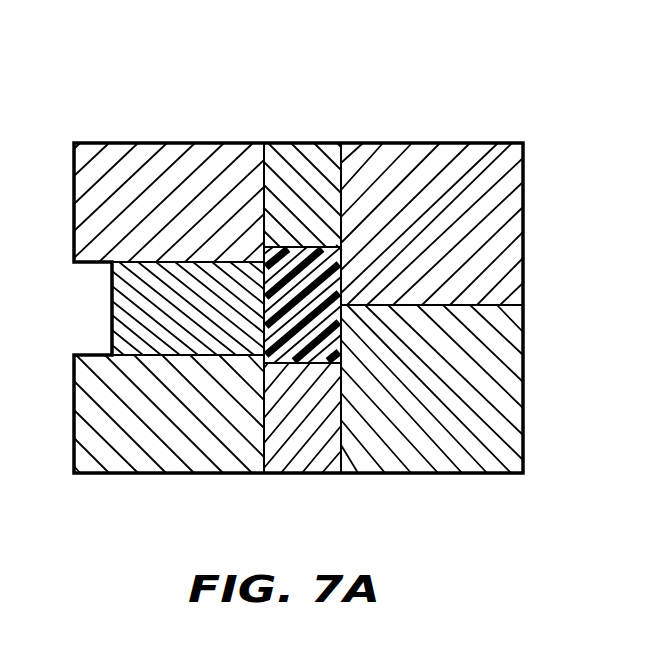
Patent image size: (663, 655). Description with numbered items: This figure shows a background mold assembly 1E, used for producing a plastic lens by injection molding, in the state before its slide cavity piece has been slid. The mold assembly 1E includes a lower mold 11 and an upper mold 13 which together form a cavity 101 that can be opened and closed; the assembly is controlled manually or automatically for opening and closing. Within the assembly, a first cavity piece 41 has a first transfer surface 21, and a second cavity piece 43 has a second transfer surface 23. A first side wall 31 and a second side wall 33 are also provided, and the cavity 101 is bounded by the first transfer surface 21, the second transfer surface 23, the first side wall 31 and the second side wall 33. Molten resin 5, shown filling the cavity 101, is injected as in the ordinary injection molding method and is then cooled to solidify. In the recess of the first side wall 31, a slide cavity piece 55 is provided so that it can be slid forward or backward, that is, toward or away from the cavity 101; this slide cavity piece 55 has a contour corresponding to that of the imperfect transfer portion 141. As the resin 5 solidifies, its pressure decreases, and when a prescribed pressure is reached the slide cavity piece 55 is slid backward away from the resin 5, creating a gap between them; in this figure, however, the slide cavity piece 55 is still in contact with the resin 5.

The mold assembly 1E is at (108, 78).
The cavity 101 is at (276, 246).
The second cavity piece 43 is at (305, 158).
The upper mold 13 is at (505, 213).
The imperfect transfer portion 141 is at (262, 292).
The molten resin 5 is at (338, 338).
The second transfer surface 23 is at (338, 245).
The second side wall 33 is at (332, 274).
The slide cavity piece 55 is at (138, 348).
The first side wall 31 is at (262, 350).
The first transfer surface 21 is at (308, 366).
The first cavity piece 41 is at (302, 450).
The lower mold 11 is at (510, 369).